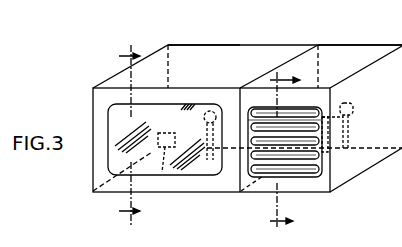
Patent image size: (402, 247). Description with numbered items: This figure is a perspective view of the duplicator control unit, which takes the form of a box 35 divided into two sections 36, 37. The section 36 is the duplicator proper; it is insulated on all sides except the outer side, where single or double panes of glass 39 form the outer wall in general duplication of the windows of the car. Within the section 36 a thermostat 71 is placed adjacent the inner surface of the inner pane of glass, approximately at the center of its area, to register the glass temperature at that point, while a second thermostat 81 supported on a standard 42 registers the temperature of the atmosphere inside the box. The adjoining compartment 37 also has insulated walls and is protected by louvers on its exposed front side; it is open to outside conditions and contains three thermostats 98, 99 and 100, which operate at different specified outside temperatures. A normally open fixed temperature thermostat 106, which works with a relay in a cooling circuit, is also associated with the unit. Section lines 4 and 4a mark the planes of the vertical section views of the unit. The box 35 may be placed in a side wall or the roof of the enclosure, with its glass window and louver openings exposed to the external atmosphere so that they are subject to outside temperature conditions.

The section line 4- 4 is at (120, 136).
The section line 4a- 4a is at (285, 156).
The box 35 is at (271, 46).
The section 36 is at (202, 45).
The section 37 is at (349, 51).
The panes of glass 39 is at (148, 170).
The standard 42 is at (203, 160).
The thermostat 71 is at (162, 172).
The second thermostat 81 is at (213, 111).
The thermostat 98 is at (299, 132).
The thermostat 99 is at (325, 118).
The thermostat 100 is at (353, 107).
The normally open fixed temperature thermostat 106 is at (250, 106).